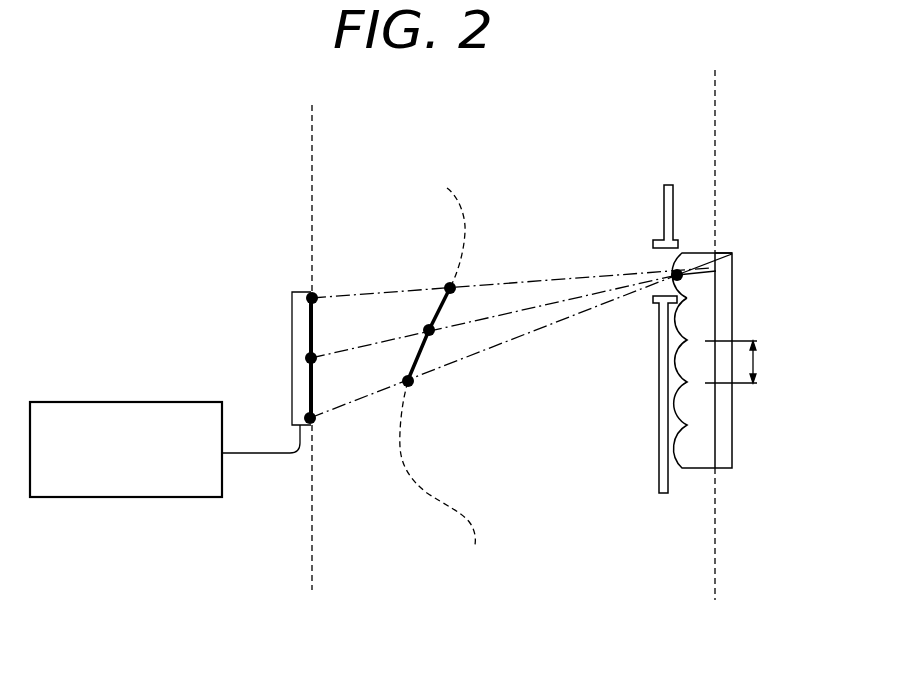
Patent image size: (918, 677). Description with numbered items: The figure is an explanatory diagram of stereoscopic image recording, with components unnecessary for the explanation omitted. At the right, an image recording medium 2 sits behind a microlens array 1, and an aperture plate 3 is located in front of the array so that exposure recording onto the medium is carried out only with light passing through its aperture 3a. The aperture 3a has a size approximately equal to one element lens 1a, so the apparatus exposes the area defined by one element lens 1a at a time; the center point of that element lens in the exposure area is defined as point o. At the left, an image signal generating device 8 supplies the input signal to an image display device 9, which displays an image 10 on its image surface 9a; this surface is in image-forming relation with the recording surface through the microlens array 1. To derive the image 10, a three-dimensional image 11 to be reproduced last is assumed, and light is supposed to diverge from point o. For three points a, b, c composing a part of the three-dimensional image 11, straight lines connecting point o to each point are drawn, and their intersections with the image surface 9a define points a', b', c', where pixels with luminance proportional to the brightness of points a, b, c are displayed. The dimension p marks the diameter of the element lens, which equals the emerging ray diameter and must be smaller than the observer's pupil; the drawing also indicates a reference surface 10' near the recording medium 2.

The microlens array 1 is at (707, 416).
The element lens 1a is at (693, 255).
The image recording medium 2 is at (730, 282).
The aperture plate 3 is at (662, 198).
The aperture 3a is at (652, 257).
The image signal generating device 8 is at (118, 402).
The image display device 9 is at (297, 327).
The image surface 9a is at (314, 396).
The image 10 is at (258, 397).
The image plane 10' is at (759, 211).
The three-dimensional image 11 is at (461, 202).
The center point of the element lens o is at (671, 273).
The point a is at (482, 335).
The point b is at (453, 368).
The point c is at (427, 410).
The intersecting point a' is at (331, 255).
The intersecting point b' is at (342, 310).
The intersecting point c' is at (330, 448).
The diameter of the microlens p is at (739, 362).